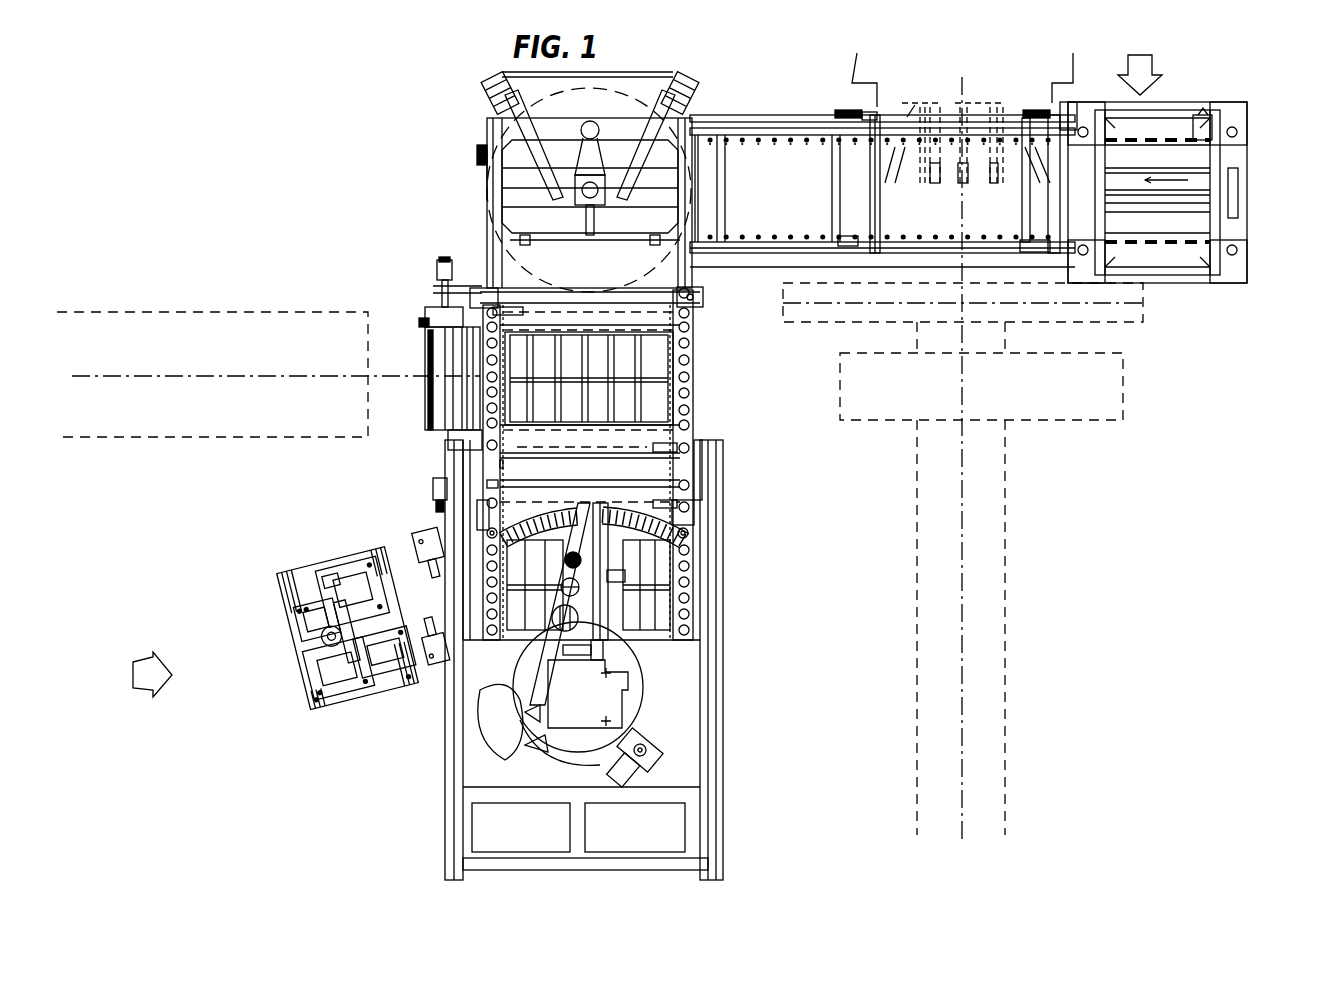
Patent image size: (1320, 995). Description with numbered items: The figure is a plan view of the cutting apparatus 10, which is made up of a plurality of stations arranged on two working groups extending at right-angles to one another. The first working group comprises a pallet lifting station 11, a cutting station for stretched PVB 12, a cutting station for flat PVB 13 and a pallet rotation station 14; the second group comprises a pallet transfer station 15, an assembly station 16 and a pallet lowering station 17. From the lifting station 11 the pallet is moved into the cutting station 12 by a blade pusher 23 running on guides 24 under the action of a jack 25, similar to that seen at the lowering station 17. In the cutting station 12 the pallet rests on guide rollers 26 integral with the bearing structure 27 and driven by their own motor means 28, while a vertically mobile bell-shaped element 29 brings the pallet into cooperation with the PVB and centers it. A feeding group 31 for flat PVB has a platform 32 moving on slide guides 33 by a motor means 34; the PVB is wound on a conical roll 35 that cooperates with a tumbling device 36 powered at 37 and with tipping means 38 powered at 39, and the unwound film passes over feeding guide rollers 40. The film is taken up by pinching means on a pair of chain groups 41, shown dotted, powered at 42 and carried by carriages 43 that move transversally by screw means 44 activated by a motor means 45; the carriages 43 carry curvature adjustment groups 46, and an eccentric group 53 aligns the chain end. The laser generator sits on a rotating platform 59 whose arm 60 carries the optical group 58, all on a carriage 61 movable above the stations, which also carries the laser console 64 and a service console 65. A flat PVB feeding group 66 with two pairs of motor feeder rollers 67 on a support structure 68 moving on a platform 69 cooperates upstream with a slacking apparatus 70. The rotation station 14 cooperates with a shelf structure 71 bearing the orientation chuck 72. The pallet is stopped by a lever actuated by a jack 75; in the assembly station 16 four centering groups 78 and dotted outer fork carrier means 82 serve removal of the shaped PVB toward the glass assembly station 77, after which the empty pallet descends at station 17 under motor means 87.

The cutting apparatus 10 is at (442, 120).
The pallet lifting station 11 is at (725, 744).
The cutting station for stretched PVB 12 is at (724, 545).
The cutting station for flat PVB 13 is at (700, 395).
The pallet rotation station 14 is at (483, 195).
The pallet transfer station 15 is at (778, 115).
The assembly station 16 is at (982, 122).
The pallet lowering station 17 is at (1185, 110).
The blade pusher 23 is at (484, 175).
The guides 24 is at (1193, 212).
The jack 25 is at (1197, 192).
The guide rollers 26 is at (692, 368).
The bearing structure 27 is at (683, 588).
The motor means 28 is at (482, 146).
The bell-shaped element 29 is at (662, 410).
The feeding group for flat PVB 31 is at (295, 672).
The platform 32 is at (297, 635).
The slide guides 33 is at (280, 587).
The motor means 34 is at (332, 582).
The conical roll 35 is at (340, 655).
The tumbling device 36 is at (388, 660).
The power means 37 is at (365, 603).
The tipping means 38 is at (300, 615).
The power means 39 is at (290, 612).
The feeding guide rollers 40 is at (438, 665).
The chain groups 41 is at (572, 300).
The power means 42 is at (702, 495).
The carriages 43 is at (700, 527).
The screw means 44 is at (480, 572).
The motor means 45 is at (490, 545).
The curvature adjustment groups 46 is at (520, 520).
The eccentric group 53 is at (500, 560).
The optical group 58 is at (665, 605).
The rotating platform 59 is at (632, 705).
The arm 60 is at (573, 603).
The carriage 61 is at (687, 762).
The console for the laser generator 64 is at (493, 828).
The service console 65 is at (673, 824).
The group for feeding the flat PVB 66 is at (430, 365).
The motor feeder rollers 67 is at (440, 398).
The support structure 68 is at (440, 322).
The platform 69 is at (505, 330).
The slacking apparatus 70 is at (178, 327).
The shelf structure 71 is at (697, 85).
The orientation chuck 72 is at (597, 213).
The jack 75 is at (845, 243).
The glass assembly station 77 is at (988, 522).
The centering groups 78 is at (878, 115).
The outer fork carrier means 82 is at (933, 173).
The motor means 87 is at (1207, 117).